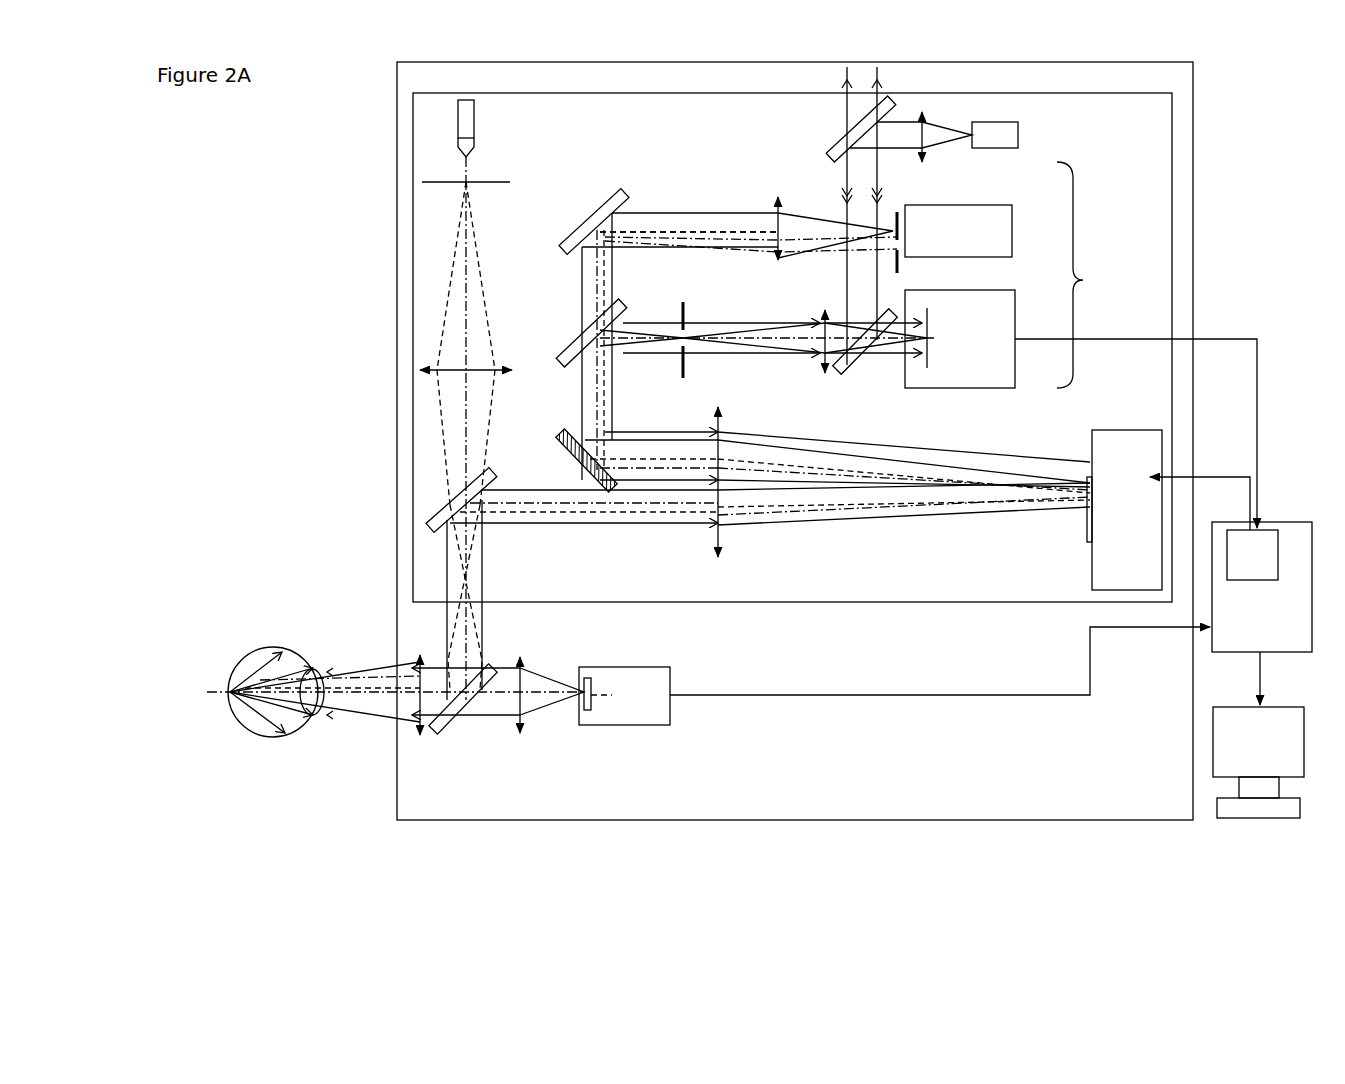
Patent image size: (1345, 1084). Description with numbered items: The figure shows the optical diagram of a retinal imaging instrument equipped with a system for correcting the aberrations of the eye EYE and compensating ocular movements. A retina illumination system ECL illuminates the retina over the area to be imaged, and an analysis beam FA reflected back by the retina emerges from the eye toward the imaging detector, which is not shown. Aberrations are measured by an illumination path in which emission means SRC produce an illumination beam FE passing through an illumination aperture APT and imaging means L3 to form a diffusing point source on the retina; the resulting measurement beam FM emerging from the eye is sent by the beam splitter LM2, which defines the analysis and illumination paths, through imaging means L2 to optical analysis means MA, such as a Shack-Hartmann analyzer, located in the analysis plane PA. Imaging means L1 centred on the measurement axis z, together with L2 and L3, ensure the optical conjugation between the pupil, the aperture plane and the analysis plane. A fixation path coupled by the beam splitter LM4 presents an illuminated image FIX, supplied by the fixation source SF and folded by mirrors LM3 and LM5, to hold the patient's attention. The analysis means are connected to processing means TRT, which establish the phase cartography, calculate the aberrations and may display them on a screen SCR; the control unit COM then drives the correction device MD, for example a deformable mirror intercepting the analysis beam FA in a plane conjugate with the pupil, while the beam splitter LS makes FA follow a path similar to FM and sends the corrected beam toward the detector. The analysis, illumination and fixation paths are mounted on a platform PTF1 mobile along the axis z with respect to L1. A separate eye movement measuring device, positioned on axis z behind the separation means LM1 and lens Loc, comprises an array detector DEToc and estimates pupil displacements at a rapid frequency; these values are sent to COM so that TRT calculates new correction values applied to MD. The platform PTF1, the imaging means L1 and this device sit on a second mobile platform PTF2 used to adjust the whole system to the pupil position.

The platform PTF1 is at (1136, 233).
The second mobile platform PTF2 is at (423, 793).
The fixation source SF is at (475, 118).
The illuminated image FIX is at (495, 182).
The mirror 3 LM3 is at (565, 238).
The beam splitter LM2 is at (565, 352).
The beam splitter LM4 is at (440, 515).
The mirror 5 LM5 is at (565, 448).
The separation means LM1 is at (440, 727).
The beam splitter LS is at (850, 370).
The analysis beam FA is at (846, 205).
The retina illumination system ECL is at (1010, 135).
The imaging means L3 is at (776, 205).
The illumination beam FE is at (690, 245).
The illumination aperture APT is at (905, 235).
The emission means SRC is at (985, 205).
The analysis plane PA is at (927, 310).
The optical analysis means MA is at (1005, 365).
The imaging means L2 is at (822, 318).
The optical correction device MD is at (1122, 460).
The control unit COM is at (1240, 548).
The processing means TRT is at (1293, 562).
The screen SCR is at (1225, 730).
The eye EYE is at (258, 728).
The measurement axis z is at (395, 680).
The measurement beam FM is at (400, 660).
The imaging means L1 is at (415, 720).
The ocular lens Loc is at (525, 735).
The array detector DEToc is at (595, 712).